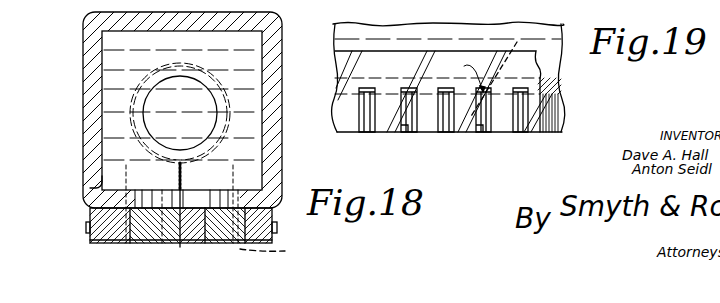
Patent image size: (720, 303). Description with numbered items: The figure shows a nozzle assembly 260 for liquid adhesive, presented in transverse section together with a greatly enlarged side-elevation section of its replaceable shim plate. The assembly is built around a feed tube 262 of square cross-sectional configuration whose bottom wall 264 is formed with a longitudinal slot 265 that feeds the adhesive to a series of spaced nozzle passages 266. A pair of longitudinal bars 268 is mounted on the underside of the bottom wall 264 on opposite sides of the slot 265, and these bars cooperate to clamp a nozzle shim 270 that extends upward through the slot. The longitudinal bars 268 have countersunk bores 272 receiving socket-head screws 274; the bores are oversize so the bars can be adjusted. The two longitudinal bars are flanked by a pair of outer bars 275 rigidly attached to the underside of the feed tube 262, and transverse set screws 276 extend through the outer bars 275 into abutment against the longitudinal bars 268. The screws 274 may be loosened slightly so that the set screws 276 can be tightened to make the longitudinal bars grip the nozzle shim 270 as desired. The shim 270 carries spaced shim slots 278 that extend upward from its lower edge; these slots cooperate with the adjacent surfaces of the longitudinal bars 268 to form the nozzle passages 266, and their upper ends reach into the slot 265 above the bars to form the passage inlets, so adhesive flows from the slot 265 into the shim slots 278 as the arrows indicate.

In FIG. 18, the nozzle assembly 260 is at (80, 57).
In FIG. 18, the feed tube 262 is at (90, 97).
In FIG. 18, the bottom wall 264 is at (100, 186).
In FIG. 19, the bottom wall 264 is at (561, 86).
In FIG. 18, the longitudinal slot 265 is at (195, 190).
In FIG. 18, the nozzle passages 266 is at (162, 200).
In FIG. 19, the nozzle passages 266 is at (410, 132).
In FIG. 18, the longitudinal bars 268 is at (90, 211).
In FIG. 19, the longitudinal bars 268 is at (360, 74).
In FIG. 18, the nozzle shim 270 is at (216, 152).
In FIG. 18, the countersunk bores 272 is at (246, 190).
In FIG. 18, the socket-head screws 274 is at (275, 252).
In FIG. 18, the outer bars 275 is at (90, 238).
In FIG. 18, the set screws 276 is at (86, 224).
In FIG. 19, the shim slots 278 is at (403, 132).